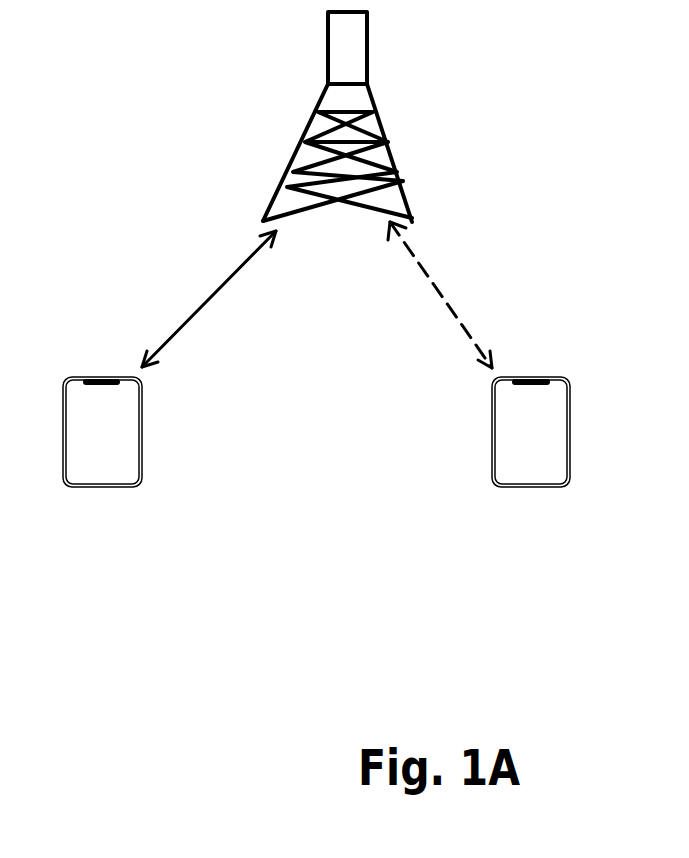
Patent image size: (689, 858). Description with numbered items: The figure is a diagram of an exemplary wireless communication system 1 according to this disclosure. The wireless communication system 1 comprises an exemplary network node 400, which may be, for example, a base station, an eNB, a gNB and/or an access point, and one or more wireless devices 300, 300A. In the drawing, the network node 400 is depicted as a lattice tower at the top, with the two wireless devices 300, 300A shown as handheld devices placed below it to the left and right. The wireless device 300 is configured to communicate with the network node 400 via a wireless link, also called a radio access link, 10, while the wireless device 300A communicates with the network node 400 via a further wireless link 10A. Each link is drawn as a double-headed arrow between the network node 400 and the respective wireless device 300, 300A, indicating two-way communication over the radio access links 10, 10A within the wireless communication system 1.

The wireless communication system 1 is at (142, 67).
The network node 400 is at (401, 171).
The wireless link 10 is at (193, 311).
The wireless link 10A is at (445, 300).
The wireless device 300 is at (102, 432).
The wireless device 300A is at (531, 432).